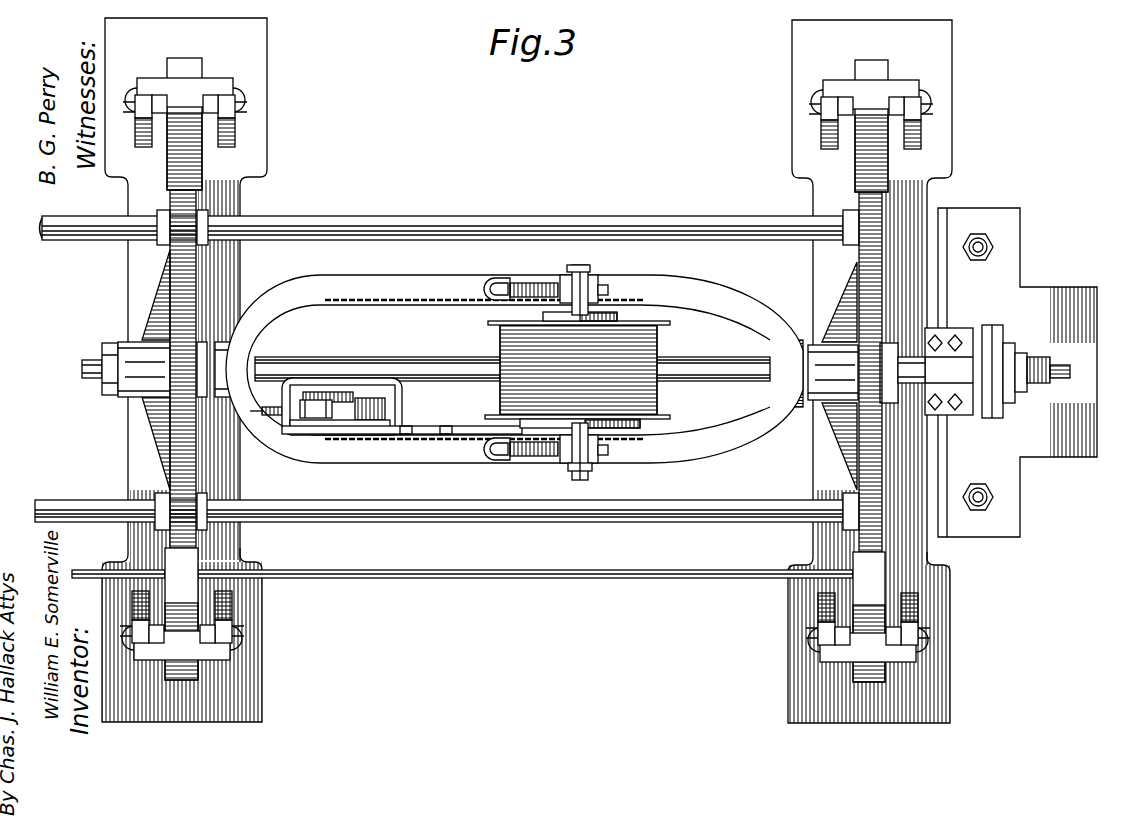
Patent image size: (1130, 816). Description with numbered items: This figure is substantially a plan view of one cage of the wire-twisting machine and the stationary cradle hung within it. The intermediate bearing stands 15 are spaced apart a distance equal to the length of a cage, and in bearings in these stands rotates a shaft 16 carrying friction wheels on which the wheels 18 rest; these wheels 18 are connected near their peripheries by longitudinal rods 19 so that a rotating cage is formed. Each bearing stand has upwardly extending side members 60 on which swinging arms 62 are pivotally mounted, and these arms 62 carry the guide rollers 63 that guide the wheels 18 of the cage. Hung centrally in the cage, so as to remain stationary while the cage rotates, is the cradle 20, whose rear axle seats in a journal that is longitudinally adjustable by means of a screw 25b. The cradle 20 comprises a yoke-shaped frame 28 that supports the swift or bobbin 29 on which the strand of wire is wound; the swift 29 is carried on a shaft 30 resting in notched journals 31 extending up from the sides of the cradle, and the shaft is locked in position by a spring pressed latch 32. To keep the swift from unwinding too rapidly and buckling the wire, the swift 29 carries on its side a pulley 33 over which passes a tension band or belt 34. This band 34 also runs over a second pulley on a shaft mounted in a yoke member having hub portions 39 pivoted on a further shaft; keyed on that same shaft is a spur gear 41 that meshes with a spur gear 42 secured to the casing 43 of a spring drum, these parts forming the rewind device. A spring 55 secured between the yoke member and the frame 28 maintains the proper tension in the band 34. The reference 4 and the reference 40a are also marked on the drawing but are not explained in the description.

The frame standards 4 is at (527, 370).
The intermediate bearing stand 15 is at (692, 580).
The shaft 16 is at (415, 340).
The wheel 18 is at (170, 280).
The longitudinal rod 19 is at (425, 236).
The cradle 20 is at (740, 445).
The screw 25b is at (1011, 372).
The yoke-shaped frame 28 is at (684, 284).
The swift or bobbin 29 is at (660, 412).
The shaft 30 is at (590, 476).
The notched journal 31 is at (600, 290).
The spring pressed latch 32 is at (540, 455).
The pulley 33 is at (628, 428).
The tension band or belt 34 is at (440, 434).
The hub portion 39 is at (355, 430).
The casing 40a is at (405, 407).
The spur gear 41 is at (325, 392).
The spur gear 42 is at (355, 400).
The casing 43 is at (370, 403).
The spring 55 is at (262, 408).
The side member 60 is at (940, 558).
The swinging arm 62 is at (930, 118).
The guide roller 63 is at (195, 63).